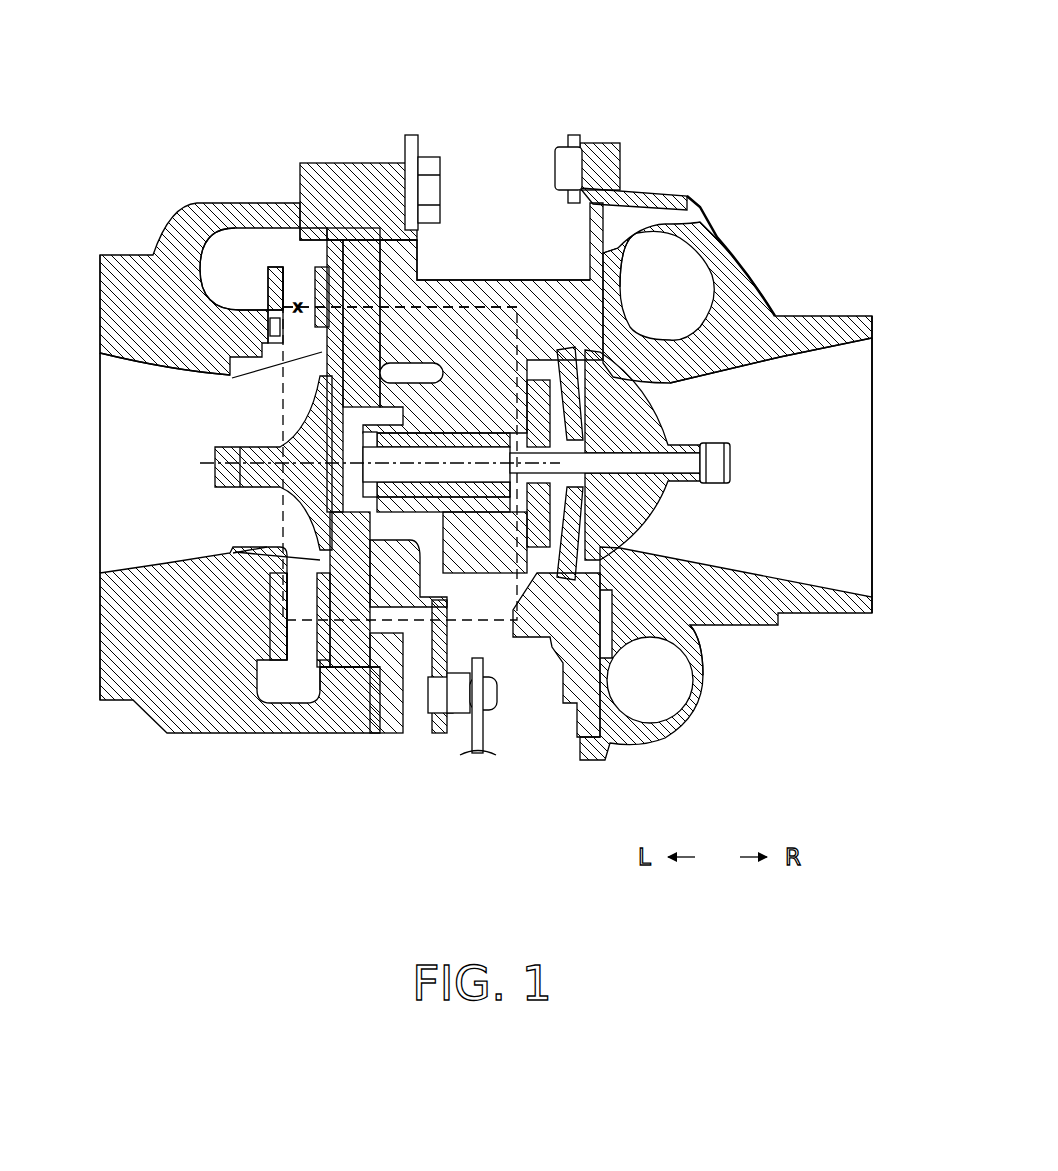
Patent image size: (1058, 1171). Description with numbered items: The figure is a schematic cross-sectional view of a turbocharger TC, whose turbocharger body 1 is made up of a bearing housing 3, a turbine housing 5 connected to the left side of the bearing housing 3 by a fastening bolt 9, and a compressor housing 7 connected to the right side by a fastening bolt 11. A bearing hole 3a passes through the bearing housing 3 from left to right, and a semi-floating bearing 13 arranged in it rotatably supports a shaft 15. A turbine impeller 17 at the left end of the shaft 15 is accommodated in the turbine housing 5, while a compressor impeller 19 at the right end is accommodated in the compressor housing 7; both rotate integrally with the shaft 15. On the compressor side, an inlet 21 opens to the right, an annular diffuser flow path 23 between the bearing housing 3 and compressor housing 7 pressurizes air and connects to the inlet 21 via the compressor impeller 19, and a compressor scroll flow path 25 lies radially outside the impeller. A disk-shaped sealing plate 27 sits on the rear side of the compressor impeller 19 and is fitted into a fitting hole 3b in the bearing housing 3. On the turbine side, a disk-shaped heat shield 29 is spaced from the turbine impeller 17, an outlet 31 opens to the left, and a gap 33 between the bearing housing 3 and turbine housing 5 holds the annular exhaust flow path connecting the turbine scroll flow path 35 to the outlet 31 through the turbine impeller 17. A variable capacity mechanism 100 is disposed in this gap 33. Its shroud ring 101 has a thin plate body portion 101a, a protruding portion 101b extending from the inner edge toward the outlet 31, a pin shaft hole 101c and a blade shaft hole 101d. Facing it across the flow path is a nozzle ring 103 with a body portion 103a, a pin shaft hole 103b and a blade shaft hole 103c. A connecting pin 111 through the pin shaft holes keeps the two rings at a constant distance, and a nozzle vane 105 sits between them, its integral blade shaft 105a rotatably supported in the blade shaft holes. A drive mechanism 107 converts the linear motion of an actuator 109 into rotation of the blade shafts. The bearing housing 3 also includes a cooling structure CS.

The turbocharger TC is at (93, 63).
The turbocharger body 1 is at (128, 136).
The bearing housing 3 is at (588, 232).
The bearing hole 3a is at (462, 482).
The fitting hole 3b is at (690, 628).
The turbine housing 5 is at (120, 255).
The compressor housing 7 is at (825, 318).
The fastening bolt 9 is at (413, 135).
The fastening bolt 11 is at (570, 140).
The bearing 13 is at (597, 755).
The shaft 15 is at (478, 482).
The turbine impeller 17 is at (240, 520).
The compressor impeller 19 is at (700, 413).
The inlet 21 is at (868, 340).
The diffuser flow path 23 is at (620, 257).
The compressor scroll flow path 25 is at (695, 212).
The sealing plate 27 is at (605, 345).
The heat shield 29 is at (317, 570).
The outlet 31 is at (175, 373).
The gap 33 is at (305, 402).
The turbine scroll flow path 35 is at (205, 215).
The variable capacity mechanism 100 is at (292, 272).
The shroud ring 101 is at (270, 263).
The body portion 101a is at (255, 345).
The protruding portion 101b is at (300, 372).
The pin shaft hole 101c is at (277, 640).
The blade shaft hole 101d is at (265, 322).
The nozzle ring 103 is at (360, 238).
The body portion 103a is at (330, 667).
The pin shaft hole 103b is at (320, 623).
The blade shaft hole 103c is at (427, 280).
The nozzle vane 105 is at (320, 268).
The blade shaft 105a is at (440, 240).
The drive mechanism 107 is at (418, 740).
The actuator 109 is at (493, 730).
The connecting pin 111 is at (320, 635).
The cooling structure CS is at (436, 333).